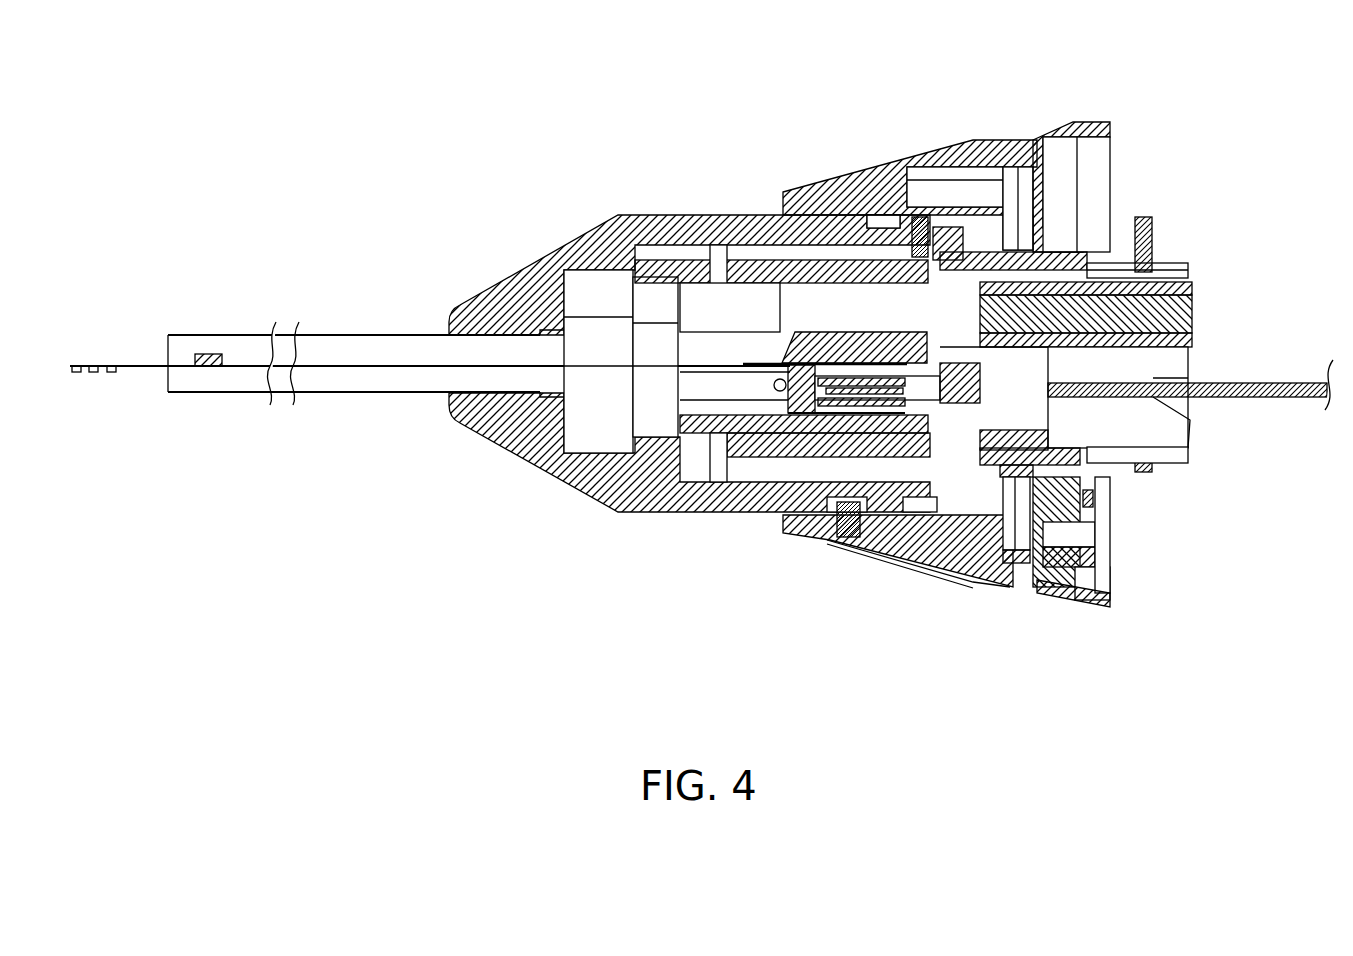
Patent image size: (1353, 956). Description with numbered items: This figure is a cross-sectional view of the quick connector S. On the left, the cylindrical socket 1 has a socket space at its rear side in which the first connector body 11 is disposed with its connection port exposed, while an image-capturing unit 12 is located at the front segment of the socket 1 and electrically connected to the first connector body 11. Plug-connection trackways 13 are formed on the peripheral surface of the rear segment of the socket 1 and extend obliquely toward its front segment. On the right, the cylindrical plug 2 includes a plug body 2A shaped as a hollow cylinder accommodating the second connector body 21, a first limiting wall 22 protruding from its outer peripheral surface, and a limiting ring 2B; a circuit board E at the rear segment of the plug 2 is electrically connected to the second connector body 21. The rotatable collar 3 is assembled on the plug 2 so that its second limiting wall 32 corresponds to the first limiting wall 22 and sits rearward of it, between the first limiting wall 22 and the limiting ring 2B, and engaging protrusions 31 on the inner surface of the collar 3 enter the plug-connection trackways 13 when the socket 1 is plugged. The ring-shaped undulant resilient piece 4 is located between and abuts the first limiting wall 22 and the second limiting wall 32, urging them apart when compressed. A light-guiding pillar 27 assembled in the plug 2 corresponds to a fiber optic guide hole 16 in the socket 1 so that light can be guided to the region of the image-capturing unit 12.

The quick connector S is at (350, 128).
The socket 1 is at (614, 232).
The first connector body 11 is at (775, 418).
The image-capturing unit 12 is at (92, 374).
The plug-connection trackway 13 is at (885, 226).
The fiber optic guide hole 16 is at (828, 312).
The plug 2 is at (1123, 657).
The plug body 2A is at (900, 470).
The limiting ring 2B is at (1090, 598).
The second connector body 21 is at (975, 372).
The first limiting wall 22 is at (945, 240).
The light-guiding pillar 27 is at (1178, 312).
The rotatable collar 3 is at (1005, 152).
The engaging protrusion 31 is at (850, 540).
The second limiting wall 32 is at (1000, 222).
The undulant resilient piece 4 is at (1085, 497).
The circuit board E is at (1258, 398).